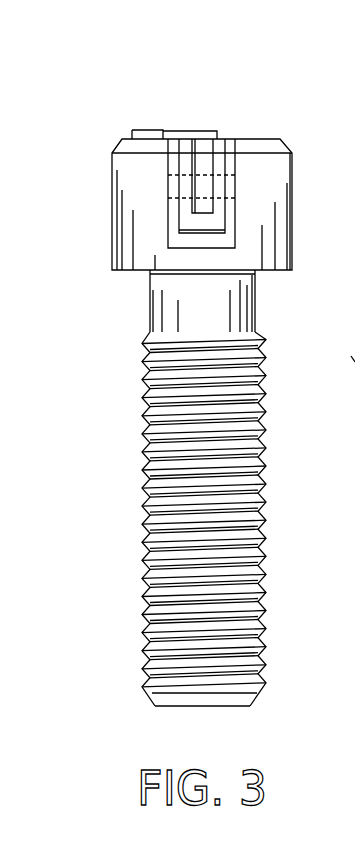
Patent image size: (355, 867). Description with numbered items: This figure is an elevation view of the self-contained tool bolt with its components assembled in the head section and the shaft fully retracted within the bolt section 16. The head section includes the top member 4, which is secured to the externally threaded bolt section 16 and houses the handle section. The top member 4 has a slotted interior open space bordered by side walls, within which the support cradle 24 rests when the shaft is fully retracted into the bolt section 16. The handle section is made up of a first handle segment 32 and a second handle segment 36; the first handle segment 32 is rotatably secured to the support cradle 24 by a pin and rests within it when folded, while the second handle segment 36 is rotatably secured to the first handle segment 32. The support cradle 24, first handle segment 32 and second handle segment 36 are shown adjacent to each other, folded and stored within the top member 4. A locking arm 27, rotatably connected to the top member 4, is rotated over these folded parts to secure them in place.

The top member 4 is at (268, 174).
The bolt section 16 is at (247, 333).
The support cradle 24 is at (172, 219).
The locking arm 27 is at (173, 129).
The first handle segment 32 is at (218, 166).
The second handle segment 36 is at (203, 154).